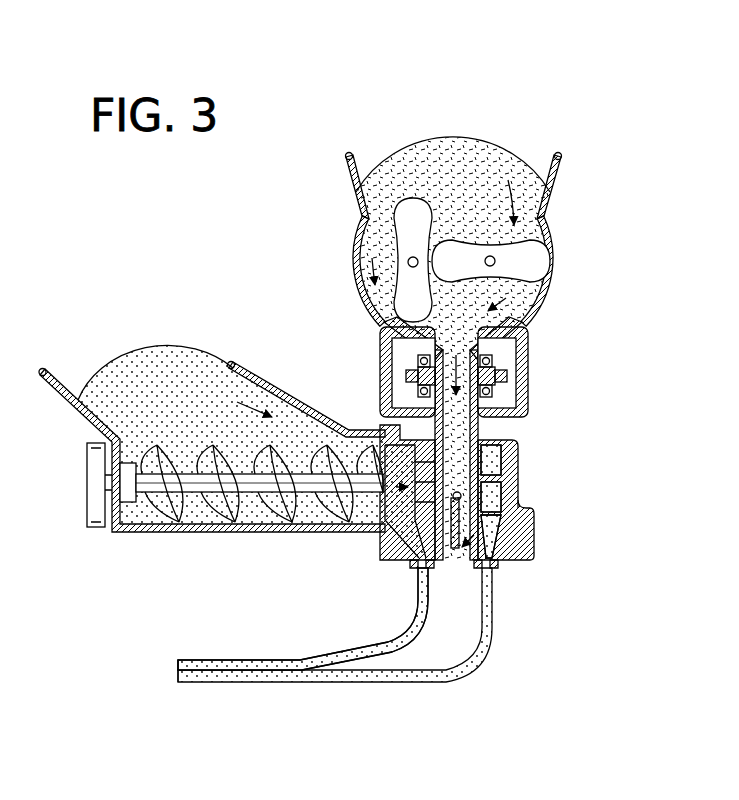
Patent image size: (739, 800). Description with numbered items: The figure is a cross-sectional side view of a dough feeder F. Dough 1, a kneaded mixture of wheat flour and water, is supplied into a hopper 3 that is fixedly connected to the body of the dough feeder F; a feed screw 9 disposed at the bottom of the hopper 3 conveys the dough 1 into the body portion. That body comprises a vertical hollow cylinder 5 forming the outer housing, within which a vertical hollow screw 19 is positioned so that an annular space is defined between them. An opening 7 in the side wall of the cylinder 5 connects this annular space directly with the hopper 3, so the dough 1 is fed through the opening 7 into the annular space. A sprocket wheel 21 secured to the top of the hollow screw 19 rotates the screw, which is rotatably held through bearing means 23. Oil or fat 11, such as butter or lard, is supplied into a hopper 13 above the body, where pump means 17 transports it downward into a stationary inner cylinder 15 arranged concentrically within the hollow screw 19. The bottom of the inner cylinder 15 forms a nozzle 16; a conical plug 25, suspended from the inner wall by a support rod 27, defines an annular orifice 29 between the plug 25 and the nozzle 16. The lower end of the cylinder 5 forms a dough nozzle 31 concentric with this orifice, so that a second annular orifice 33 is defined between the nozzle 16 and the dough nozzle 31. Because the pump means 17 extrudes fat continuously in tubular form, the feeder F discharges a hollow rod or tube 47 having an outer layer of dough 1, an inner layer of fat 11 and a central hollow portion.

The dough 1 is at (147, 362).
The hopper 3 is at (55, 372).
The dough feeder F is at (333, 384).
The vertical hollow cylinder 5 is at (515, 468).
The opening 7 is at (382, 512).
The feed screw 9 is at (238, 505).
The oil or fat 11 is at (495, 150).
The hopper 13 is at (565, 178).
The inner cylinder 15 is at (474, 425).
The nozzle 16 is at (510, 540).
The pump means 17 is at (536, 256).
The vertical hollow screw 19 is at (505, 452).
The sprocket wheel 21 is at (505, 380).
The bearing means 23 is at (492, 355).
The conical plug 25 is at (446, 568).
The support rod 27 is at (462, 495).
The annular orifice 29 is at (480, 570).
The dough nozzle 31 is at (414, 566).
The annular orifice 33 is at (495, 566).
The hollow rod or tube 47 is at (456, 642).